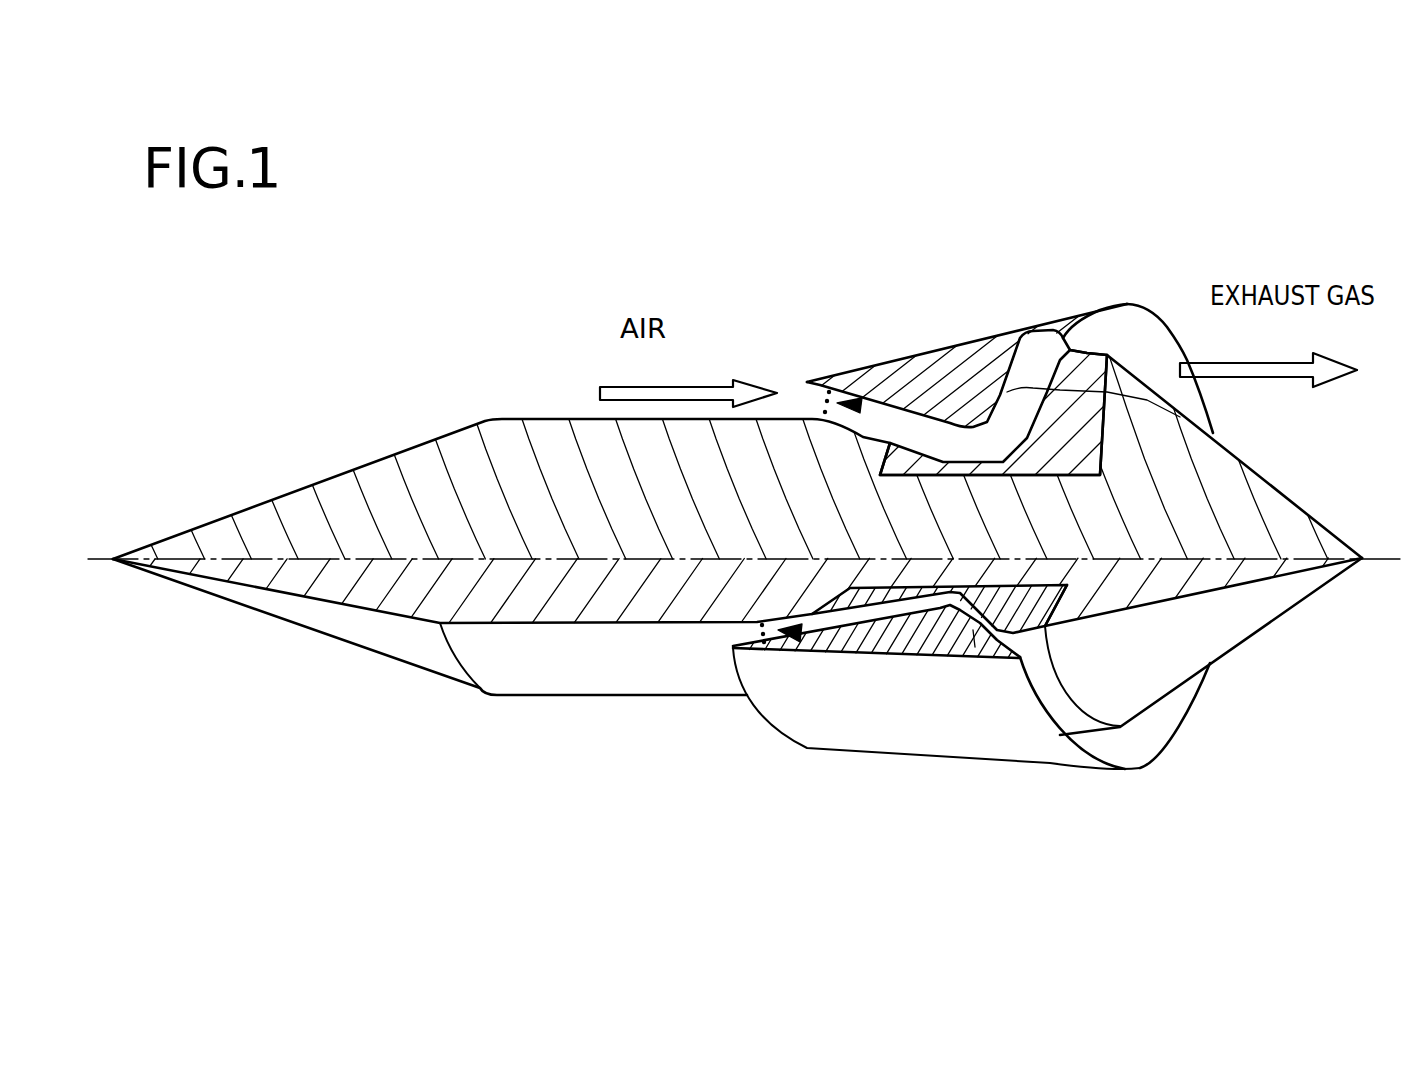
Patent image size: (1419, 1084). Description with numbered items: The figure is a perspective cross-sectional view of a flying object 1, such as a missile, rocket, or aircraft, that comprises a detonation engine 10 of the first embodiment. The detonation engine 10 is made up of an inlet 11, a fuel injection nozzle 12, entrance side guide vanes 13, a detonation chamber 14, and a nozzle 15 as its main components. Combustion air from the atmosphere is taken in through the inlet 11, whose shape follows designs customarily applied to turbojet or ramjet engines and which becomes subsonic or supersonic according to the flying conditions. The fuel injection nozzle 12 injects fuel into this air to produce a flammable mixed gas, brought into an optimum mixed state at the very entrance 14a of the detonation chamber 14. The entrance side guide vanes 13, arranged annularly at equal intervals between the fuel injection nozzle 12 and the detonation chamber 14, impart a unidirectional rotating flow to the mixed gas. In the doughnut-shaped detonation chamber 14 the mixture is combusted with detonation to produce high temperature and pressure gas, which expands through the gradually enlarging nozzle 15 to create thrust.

The flying object 1 is at (462, 330).
The detonation engine 10 is at (1010, 280).
The inlet 11 is at (803, 398).
The fuel injection nozzle 12 is at (873, 405).
The entrance side guide vanes 13 is at (1007, 418).
The detonation chamber 14 is at (1037, 357).
The entrance of the detonation chamber 14a is at (1180, 417).
The nozzle 15 is at (1127, 343).